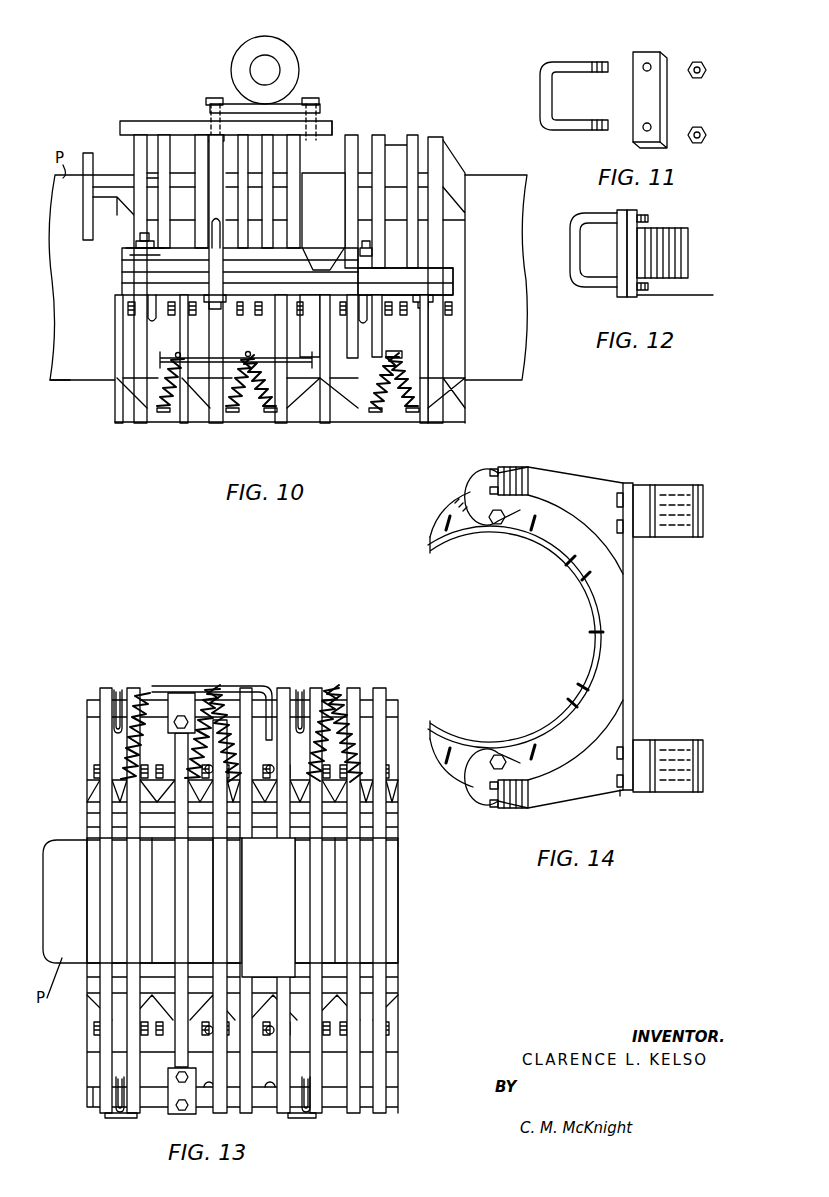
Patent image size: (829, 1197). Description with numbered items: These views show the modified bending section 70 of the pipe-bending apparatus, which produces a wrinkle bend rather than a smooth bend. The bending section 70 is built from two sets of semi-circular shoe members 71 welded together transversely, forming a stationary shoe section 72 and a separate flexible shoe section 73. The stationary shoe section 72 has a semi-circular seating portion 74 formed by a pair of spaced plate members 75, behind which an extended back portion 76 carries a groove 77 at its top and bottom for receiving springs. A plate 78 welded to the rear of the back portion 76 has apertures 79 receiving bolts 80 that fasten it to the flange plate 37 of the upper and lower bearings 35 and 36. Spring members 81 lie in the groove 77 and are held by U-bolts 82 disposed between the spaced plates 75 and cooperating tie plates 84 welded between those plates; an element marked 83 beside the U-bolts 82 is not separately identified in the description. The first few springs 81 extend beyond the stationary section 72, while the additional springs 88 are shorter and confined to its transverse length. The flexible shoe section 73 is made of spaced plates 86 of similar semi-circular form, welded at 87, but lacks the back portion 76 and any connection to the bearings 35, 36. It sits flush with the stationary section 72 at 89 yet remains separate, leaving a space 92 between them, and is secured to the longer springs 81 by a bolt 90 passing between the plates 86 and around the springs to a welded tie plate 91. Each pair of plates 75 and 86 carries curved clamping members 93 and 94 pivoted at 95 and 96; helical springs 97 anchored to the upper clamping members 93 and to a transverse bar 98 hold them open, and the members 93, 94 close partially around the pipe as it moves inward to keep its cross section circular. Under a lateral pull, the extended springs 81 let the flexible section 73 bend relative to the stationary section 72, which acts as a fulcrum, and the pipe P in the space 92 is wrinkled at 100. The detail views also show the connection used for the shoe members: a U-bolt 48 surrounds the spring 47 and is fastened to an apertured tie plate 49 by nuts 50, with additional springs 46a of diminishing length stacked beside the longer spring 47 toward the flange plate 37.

In FIG. 10, the upper bearing 35 is at (298, 77).
In FIG. 14, the upper bearing 35 is at (695, 505).
In FIG. 14, the lower bearing 36 is at (700, 768).
In FIG. 10, the flange plate 37 is at (322, 113).
In FIG. 12, the additional springs 46a is at (680, 268).
In FIG. 12, the spring 47 is at (620, 263).
In FIG. 11, the U-bolt 48 is at (549, 65).
In FIG. 12, the U-bolt 48 is at (575, 242).
In FIG. 11, the apertured tie plate 49 is at (655, 117).
In FIG. 12, the apertured tie plate 49 is at (630, 242).
In FIG. 11, the nuts 50 is at (707, 70).
In FIG. 12, the nuts 50 is at (640, 297).
In FIG. 10, the modified bending section 70 is at (107, 366).
In FIG. 14, the semi-circular shoe members 71 is at (610, 672).
In FIG. 10, the stationary shoe section 72 is at (122, 275).
In FIG. 10, the flexible shoe section 73 is at (461, 253).
In FIG. 14, the semi-circular seating portion 74 is at (592, 620).
In FIG. 10, the spaced plate members 75 is at (140, 165).
In FIG. 13, the spaced plate members 75 is at (104, 703).
In FIG. 14, the extended back portion 76 is at (573, 500).
In FIG. 14, the groove 77 is at (525, 472).
In FIG. 10, the plate 78 is at (320, 173).
In FIG. 14, the plate 78 is at (630, 586).
In FIG. 10, the apertures 79 is at (210, 126).
In FIG. 10, the bolts 80 is at (214, 118).
In FIG. 14, the bolts 80 is at (619, 791).
In FIG. 10, the spring members 81 is at (125, 292).
In FIG. 14, the spring members 81 is at (505, 465).
In FIG. 10, the U-bolts 82 is at (128, 260).
In FIG. 10, the nut 83 is at (136, 243).
In FIG. 10, the tie plates 84 is at (225, 236).
In FIG. 10, the spaced plates 86 is at (440, 162).
In FIG. 14, the spaced plates 86 is at (563, 545).
In FIG. 13, the spaced plates 86 is at (380, 700).
In FIG. 13, the weld 87 is at (146, 912).
In FIG. 10, the additional springs 88 is at (282, 250).
In FIG. 10, the adjacent position 89 is at (318, 372).
In FIG. 10, the bolt 90 is at (360, 285).
In FIG. 10, the welded tie plate 91 is at (368, 316).
In FIG. 10, the space 92 is at (358, 140).
In FIG. 13, the space 92 is at (243, 925).
In FIG. 14, the upper curved clamping member 93 is at (433, 535).
In FIG. 13, the upper curved clamping member 93 is at (122, 790).
In FIG. 14, the lower curved clamping member 94 is at (438, 735).
In FIG. 13, the lower curved clamping member 94 is at (122, 1038).
In FIG. 14, the upper pivot 95 is at (492, 528).
In FIG. 13, the upper pivot 95 is at (95, 771).
In FIG. 14, the lower pivot 96 is at (497, 755).
In FIG. 13, the lower pivot 96 is at (95, 1030).
In FIG. 10, the helical springs 97 is at (410, 388).
In FIG. 13, the helical springs 97 is at (226, 716).
In FIG. 10, the transverse bar 98 is at (170, 360).
In FIG. 13, the transverse bar 98 is at (165, 688).
In FIG. 10, the wrinkle location 100 is at (343, 150).